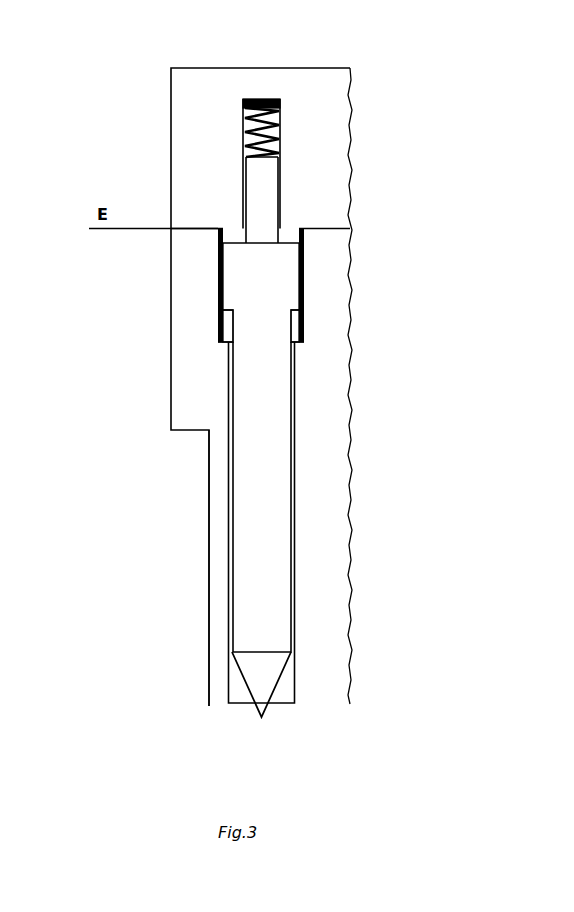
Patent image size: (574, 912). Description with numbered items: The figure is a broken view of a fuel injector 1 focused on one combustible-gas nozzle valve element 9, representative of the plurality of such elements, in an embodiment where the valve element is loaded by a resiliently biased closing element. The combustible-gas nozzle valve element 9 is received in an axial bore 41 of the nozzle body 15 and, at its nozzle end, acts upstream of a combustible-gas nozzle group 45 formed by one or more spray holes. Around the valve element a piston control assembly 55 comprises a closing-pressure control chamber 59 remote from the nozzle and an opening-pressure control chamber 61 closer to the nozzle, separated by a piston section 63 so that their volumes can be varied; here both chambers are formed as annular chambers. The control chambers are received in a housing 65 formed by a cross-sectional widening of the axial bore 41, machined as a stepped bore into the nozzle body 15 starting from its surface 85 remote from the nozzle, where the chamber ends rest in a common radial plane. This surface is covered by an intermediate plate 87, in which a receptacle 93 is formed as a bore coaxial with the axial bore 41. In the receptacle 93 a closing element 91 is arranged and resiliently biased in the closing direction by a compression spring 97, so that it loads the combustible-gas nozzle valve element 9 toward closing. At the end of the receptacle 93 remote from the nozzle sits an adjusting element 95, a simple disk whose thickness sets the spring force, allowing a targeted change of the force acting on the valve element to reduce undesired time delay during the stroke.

The fuel injector 1 is at (218, 387).
The combustible-gas nozzle valve element 9 is at (258, 565).
The nozzle body 15 is at (197, 385).
The axial bore 41 is at (228, 508).
The combustible-gas nozzle group 45 is at (251, 706).
The piston control assembly 55 is at (264, 295).
The closing-pressure control chamber 59 is at (217, 237).
The opening-pressure control chamber 61 is at (228, 329).
The piston section 63 is at (272, 289).
The housing 65 is at (305, 335).
The surface of the nozzle body remote from the nozzle 85 is at (192, 226).
The intermediate plate 87 is at (203, 85).
The closing element 91 is at (265, 192).
The receptacle 93 is at (245, 177).
The adjusting element 95 is at (262, 100).
The compression spring 97 is at (280, 128).